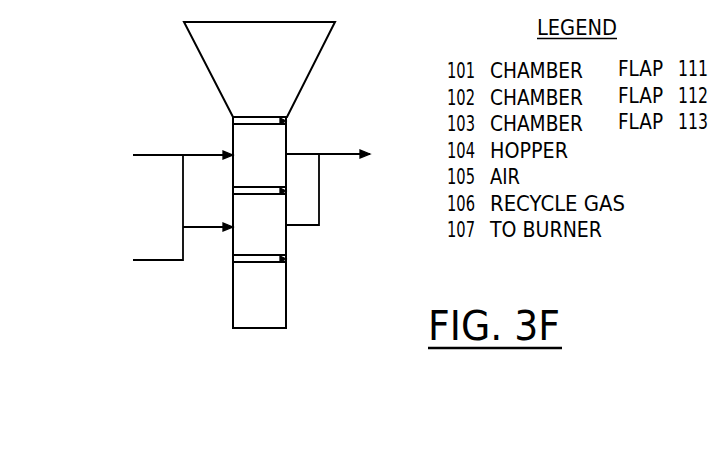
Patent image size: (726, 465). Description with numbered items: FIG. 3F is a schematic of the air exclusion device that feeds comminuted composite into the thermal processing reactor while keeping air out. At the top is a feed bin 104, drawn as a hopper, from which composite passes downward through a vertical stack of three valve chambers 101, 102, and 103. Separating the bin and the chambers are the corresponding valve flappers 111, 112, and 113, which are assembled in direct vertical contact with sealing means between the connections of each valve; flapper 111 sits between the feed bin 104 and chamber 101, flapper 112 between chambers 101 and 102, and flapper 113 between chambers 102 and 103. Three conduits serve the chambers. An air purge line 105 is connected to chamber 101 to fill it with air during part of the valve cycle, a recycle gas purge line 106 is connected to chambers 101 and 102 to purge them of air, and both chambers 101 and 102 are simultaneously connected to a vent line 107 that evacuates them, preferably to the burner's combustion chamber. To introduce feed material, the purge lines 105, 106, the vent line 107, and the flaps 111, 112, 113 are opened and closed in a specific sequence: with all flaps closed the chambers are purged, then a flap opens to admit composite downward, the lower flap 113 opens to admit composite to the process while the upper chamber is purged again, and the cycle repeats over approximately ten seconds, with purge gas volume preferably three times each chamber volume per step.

The valve chamber 101 is at (259, 155).
The valve chamber 102 is at (259, 224).
The valve chamber 103 is at (259, 295).
The feed bin 104 is at (259, 69).
The air purge line 105 is at (156, 157).
The recycle gas purge line 106 is at (156, 214).
The vent line 107 is at (352, 180).
The valve flapper 111 is at (284, 120).
The valve flapper 112 is at (286, 192).
The valve flapper 113 is at (286, 262).